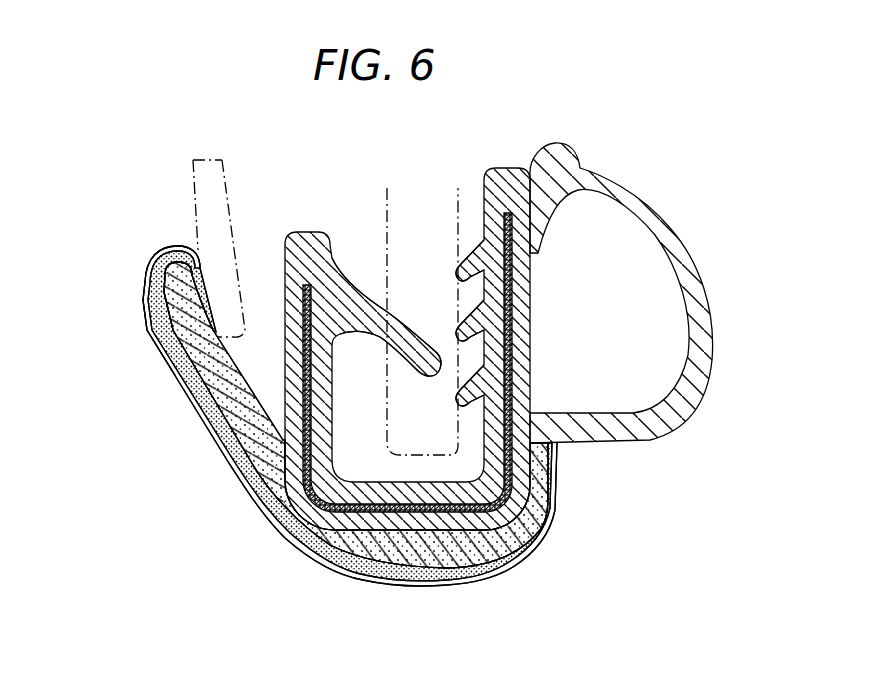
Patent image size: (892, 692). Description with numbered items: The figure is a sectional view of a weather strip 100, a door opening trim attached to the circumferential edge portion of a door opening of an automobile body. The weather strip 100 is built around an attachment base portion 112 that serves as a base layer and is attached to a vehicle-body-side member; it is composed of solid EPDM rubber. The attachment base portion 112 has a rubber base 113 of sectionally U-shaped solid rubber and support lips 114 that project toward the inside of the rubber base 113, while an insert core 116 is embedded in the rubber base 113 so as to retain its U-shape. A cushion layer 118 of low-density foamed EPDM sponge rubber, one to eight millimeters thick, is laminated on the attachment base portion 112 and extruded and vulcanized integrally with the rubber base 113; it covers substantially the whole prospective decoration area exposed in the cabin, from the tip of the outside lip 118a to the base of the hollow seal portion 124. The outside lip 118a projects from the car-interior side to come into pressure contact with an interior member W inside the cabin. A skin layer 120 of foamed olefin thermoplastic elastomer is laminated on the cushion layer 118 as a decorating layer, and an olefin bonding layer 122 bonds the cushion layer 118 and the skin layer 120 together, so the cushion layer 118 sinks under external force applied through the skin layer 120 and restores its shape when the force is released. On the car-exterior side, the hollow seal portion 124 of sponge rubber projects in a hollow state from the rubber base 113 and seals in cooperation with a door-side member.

The weather strip 100 is at (555, 540).
The attachment base portion 112 is at (306, 231).
The rubber base 113 is at (326, 273).
The support lips 114 is at (395, 327).
The insert core 116 is at (300, 380).
The cushion layer 118 is at (360, 580).
The outside lip 118a is at (168, 262).
The skin layer 120 is at (453, 583).
The olefin bonding layer 122 is at (405, 583).
The hollow seal portion 124 is at (690, 390).
The interior member W is at (218, 207).